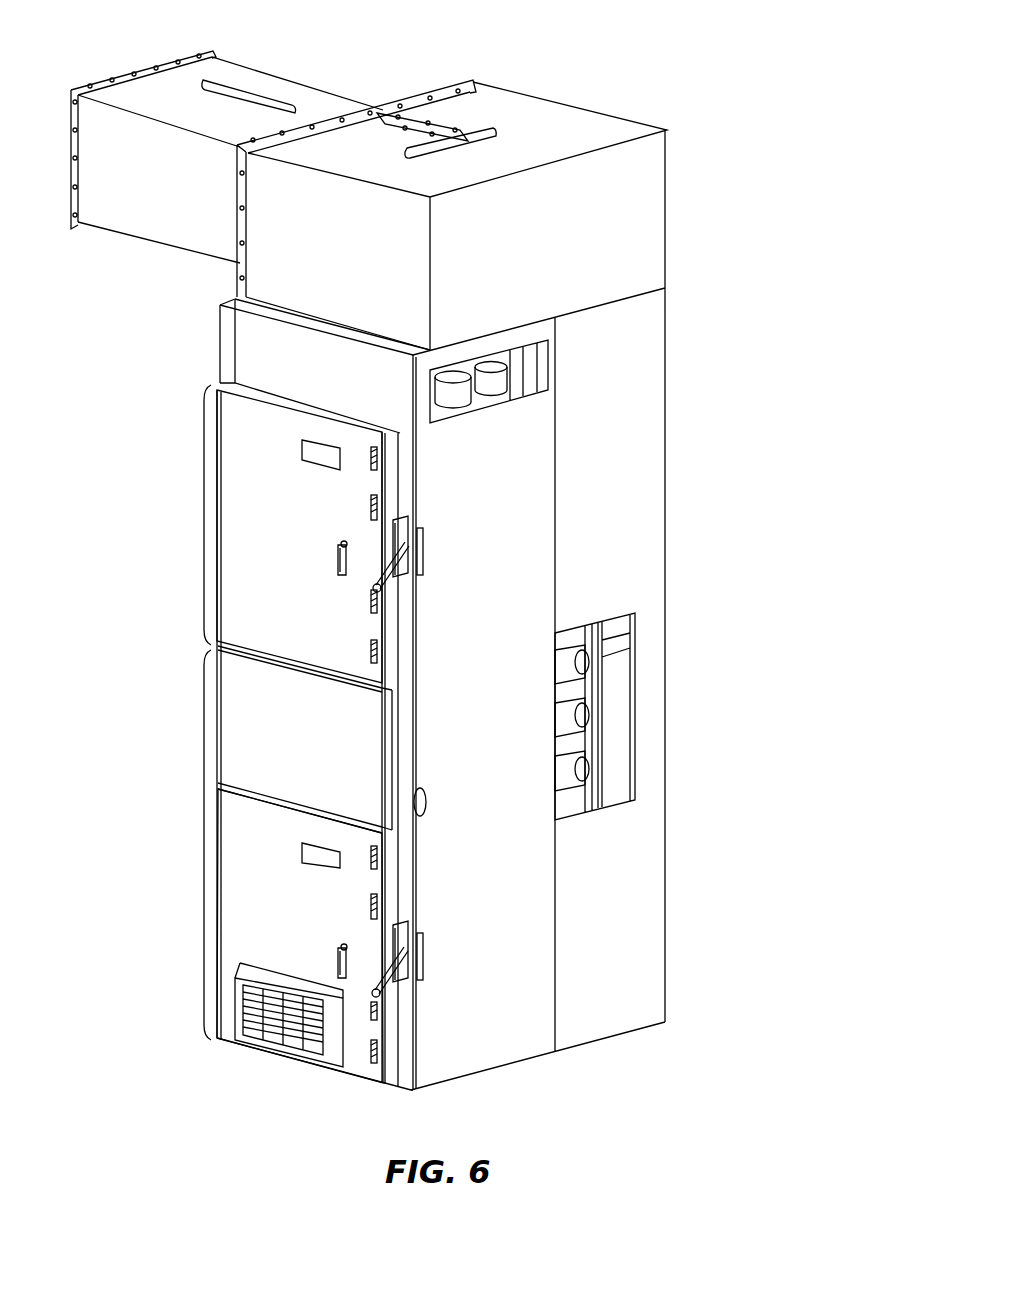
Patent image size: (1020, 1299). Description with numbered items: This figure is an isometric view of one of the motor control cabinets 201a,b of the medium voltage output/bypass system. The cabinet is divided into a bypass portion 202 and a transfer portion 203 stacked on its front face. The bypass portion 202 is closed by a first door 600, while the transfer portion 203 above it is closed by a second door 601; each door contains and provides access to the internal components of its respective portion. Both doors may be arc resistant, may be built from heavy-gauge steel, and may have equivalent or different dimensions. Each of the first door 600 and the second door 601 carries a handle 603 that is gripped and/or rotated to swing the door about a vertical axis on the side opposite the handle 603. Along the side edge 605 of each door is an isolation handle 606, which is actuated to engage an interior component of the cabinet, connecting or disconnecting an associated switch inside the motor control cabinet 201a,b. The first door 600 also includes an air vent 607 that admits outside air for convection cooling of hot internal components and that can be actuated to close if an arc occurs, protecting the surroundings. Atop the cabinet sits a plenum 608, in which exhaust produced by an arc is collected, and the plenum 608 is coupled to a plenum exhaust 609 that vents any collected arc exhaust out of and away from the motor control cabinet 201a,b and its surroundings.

The motor control cabinet 201a,b is at (668, 53).
The plenum exhaust 609 is at (245, 92).
The plenum 608 is at (568, 132).
The second door 601 is at (277, 460).
The first door 600 is at (272, 853).
The handle 603 is at (337, 563).
The isolation handle 606 is at (388, 588).
The side edge 605 is at (389, 629).
The air vent 607 is at (260, 1048).
The transfer portion 203 is at (204, 517).
The bypass portion 202 is at (204, 840).